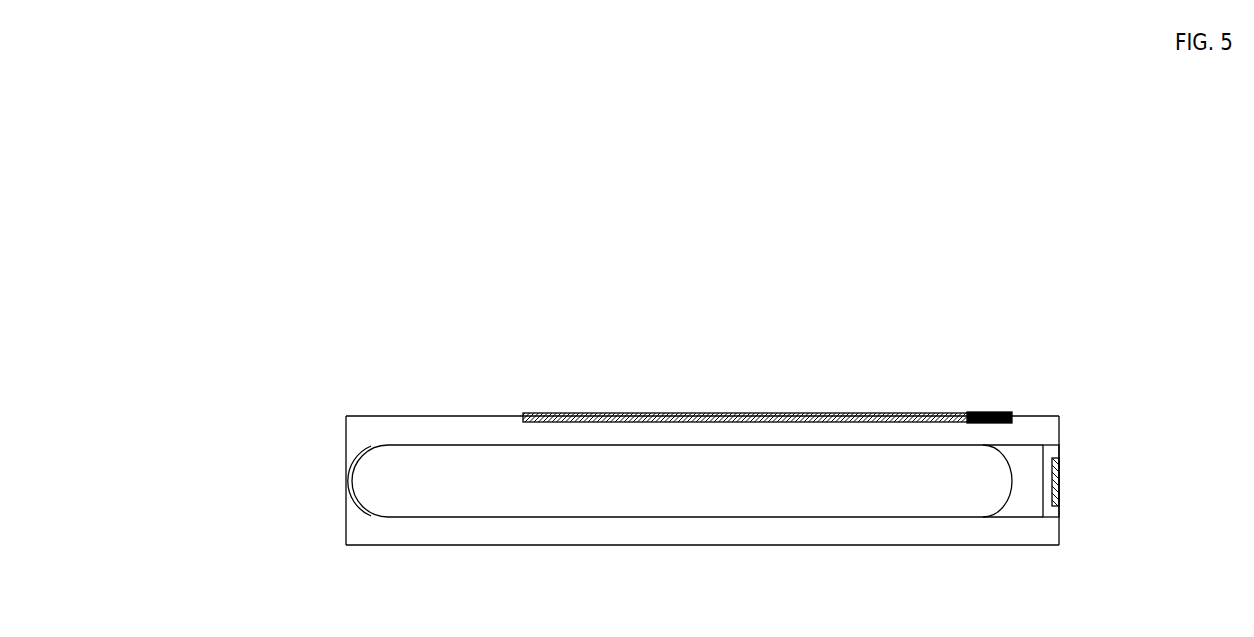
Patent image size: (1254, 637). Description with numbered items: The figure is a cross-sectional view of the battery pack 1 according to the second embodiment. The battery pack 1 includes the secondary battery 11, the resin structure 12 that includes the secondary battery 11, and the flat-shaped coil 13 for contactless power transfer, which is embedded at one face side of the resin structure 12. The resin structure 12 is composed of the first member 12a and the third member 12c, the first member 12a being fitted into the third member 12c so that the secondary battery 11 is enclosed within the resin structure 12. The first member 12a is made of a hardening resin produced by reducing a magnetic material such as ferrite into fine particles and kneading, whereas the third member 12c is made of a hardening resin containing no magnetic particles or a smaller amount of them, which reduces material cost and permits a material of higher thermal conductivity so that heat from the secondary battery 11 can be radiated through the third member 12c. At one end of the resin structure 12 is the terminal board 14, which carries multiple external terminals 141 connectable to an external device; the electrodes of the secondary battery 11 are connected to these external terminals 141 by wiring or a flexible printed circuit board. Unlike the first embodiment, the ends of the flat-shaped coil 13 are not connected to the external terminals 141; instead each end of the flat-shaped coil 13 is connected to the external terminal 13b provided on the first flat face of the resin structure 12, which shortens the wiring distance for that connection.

The battery pack 1 is at (833, 296).
The secondary battery 11 is at (734, 505).
The resin structure 12 is at (227, 407).
The first member 12a is at (374, 432).
The third member 12c is at (365, 527).
The flat-shaped coil 13 is at (703, 413).
The external terminal 13b is at (1000, 412).
The terminal board 14 is at (1052, 451).
The external terminals 141 is at (1055, 478).